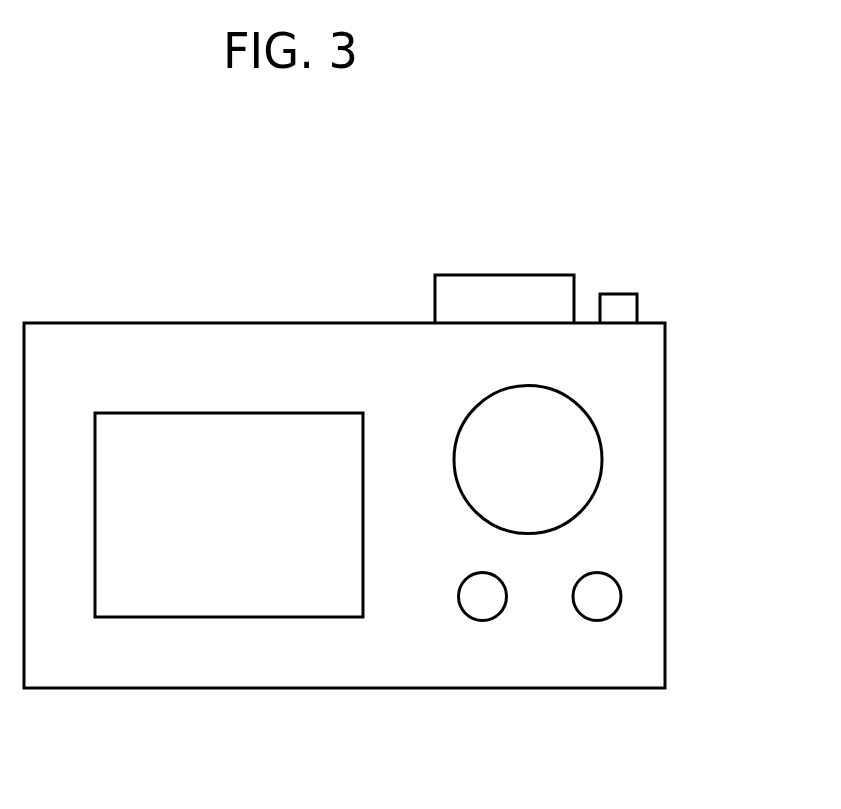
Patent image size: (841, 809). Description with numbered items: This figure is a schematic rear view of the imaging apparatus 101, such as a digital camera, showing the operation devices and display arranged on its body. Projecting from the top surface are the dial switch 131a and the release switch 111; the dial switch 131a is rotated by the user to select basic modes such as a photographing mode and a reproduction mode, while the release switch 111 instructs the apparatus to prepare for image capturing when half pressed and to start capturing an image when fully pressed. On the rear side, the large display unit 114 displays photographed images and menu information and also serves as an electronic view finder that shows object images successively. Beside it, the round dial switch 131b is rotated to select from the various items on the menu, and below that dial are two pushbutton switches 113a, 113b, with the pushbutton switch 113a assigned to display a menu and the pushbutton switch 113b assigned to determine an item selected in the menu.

The imaging apparatus 101 is at (76, 338).
The dial switch 131a is at (500, 288).
The release switch 111 is at (612, 307).
The dial switch 131b is at (560, 468).
The display unit 114 is at (236, 596).
The pushbutton switch 113a is at (482, 610).
The pushbutton switch 113b is at (593, 612).